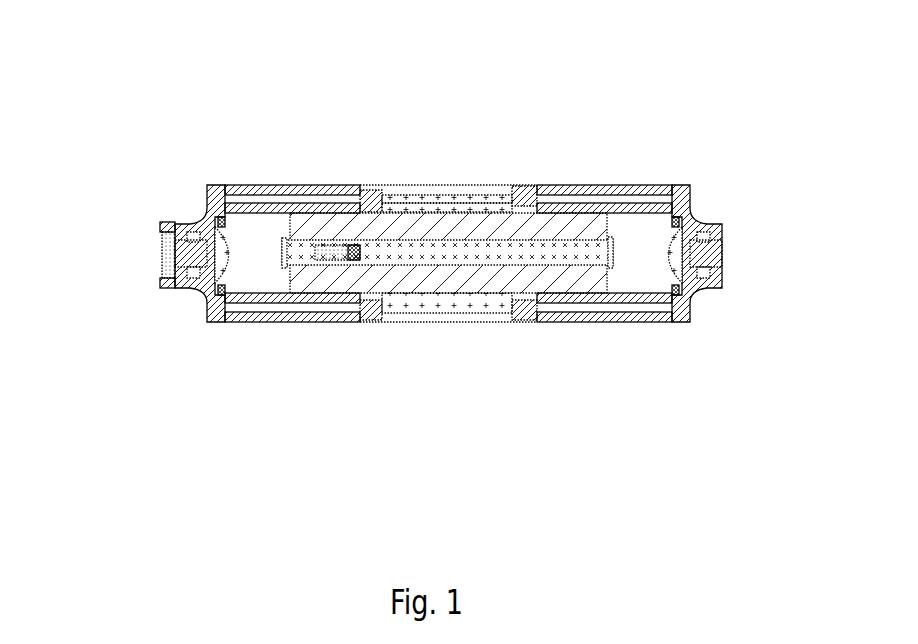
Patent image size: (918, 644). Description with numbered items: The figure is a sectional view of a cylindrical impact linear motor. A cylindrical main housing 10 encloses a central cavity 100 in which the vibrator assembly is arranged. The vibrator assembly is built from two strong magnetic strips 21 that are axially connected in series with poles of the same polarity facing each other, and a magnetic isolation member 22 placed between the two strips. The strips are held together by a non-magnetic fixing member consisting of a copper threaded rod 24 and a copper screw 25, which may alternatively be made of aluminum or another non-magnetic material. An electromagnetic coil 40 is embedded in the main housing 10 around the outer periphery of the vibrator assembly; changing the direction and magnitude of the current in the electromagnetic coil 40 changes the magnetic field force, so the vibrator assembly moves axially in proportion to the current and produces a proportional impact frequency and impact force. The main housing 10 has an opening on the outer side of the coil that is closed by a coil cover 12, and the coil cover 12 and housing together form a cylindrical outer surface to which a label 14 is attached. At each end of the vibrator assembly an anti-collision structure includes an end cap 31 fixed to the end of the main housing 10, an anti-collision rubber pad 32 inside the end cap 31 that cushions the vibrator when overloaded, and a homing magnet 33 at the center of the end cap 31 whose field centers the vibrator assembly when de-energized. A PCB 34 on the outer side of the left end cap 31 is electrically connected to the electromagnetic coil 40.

The central cavity 100 is at (450, 243).
The main housing 10 is at (552, 334).
The coil cover 12 is at (365, 175).
The label 14 is at (250, 340).
The strong magnetic strip 21 is at (488, 181).
The magnetic isolation member 22 is at (458, 309).
The copper threaded rod 24 is at (527, 242).
The copper screw 25 is at (292, 234).
The end cap 31 is at (162, 216).
The anti-collision rubber pad 32 is at (202, 213).
The homing magnet 33 is at (181, 285).
The PCB 34 is at (151, 243).
The electromagnetic coil 40 is at (426, 191).